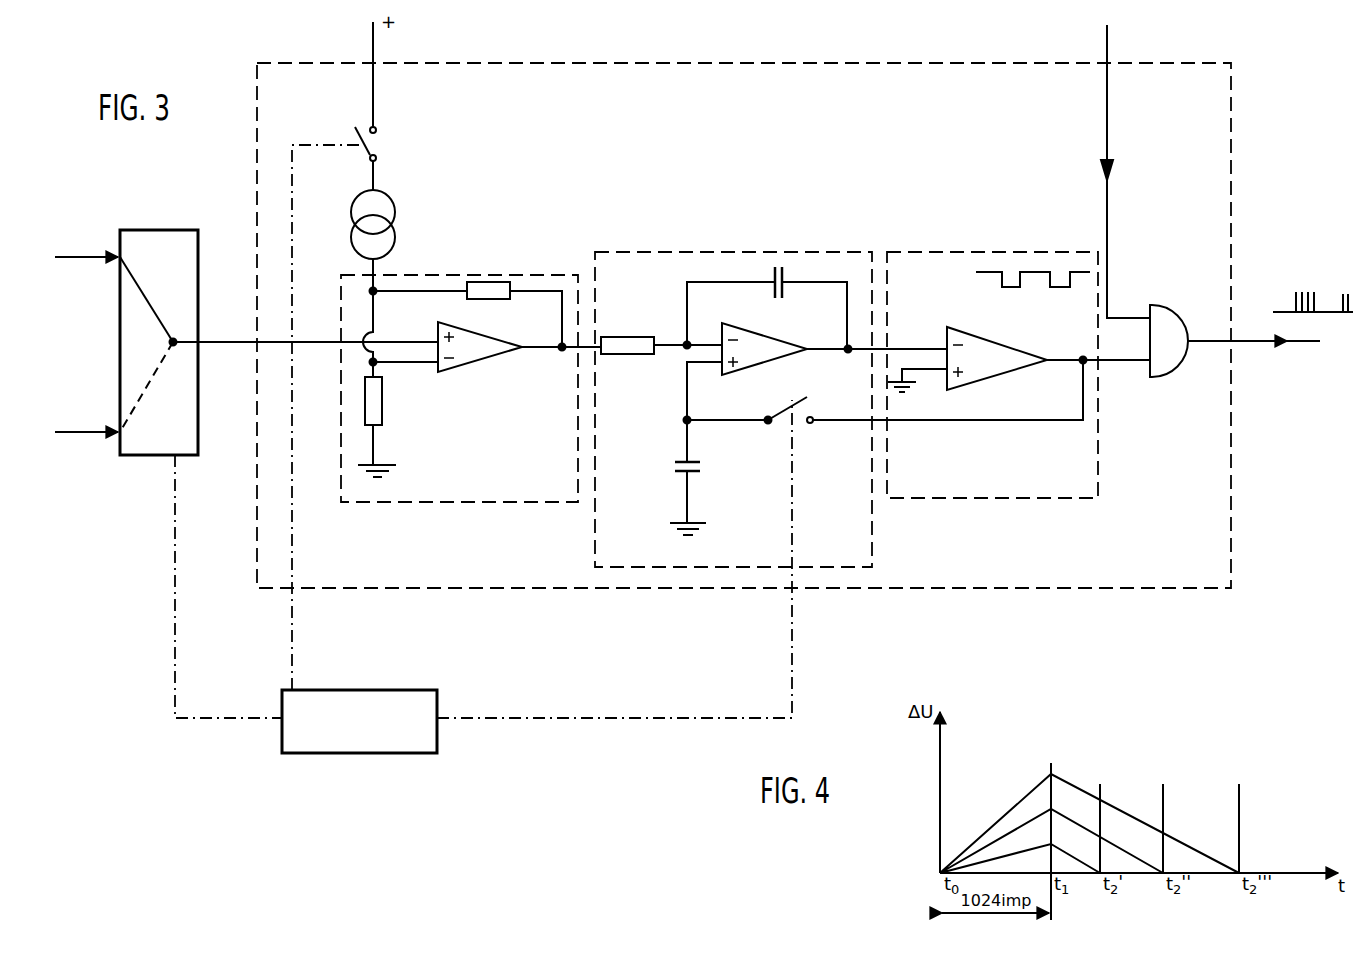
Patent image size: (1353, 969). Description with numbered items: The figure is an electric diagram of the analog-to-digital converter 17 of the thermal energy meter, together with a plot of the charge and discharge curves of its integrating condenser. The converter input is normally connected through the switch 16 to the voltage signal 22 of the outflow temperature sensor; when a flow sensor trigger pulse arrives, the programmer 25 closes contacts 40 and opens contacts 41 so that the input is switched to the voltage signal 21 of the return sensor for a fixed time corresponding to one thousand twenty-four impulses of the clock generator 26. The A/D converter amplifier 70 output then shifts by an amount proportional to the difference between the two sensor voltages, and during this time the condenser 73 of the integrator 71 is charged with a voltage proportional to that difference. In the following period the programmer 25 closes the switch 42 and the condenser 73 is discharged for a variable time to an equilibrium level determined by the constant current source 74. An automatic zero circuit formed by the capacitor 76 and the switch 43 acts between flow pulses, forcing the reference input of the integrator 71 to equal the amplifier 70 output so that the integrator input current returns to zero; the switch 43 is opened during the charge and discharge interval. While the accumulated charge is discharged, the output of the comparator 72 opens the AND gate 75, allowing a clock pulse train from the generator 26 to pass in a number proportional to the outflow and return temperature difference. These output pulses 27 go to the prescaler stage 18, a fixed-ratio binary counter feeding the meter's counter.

The switch 16 is at (159, 318).
The analog-to-digital converter 17 is at (245, 582).
The prescaler stage 18 is at (1313, 302).
The voltage signal of return sensor 21 is at (86, 419).
The voltage signal of outflow sensor 22 is at (86, 244).
The programmer 25 is at (358, 690).
The clock generator 26 is at (1112, 48).
The output signal θ 27 is at (1263, 357).
The contacts 40 is at (152, 377).
The contacts 41 is at (153, 305).
The switch 42 is at (375, 145).
The switch 43 is at (792, 404).
The A/D converter amplifier 70 is at (497, 505).
The integrator 71 is at (839, 395).
The comparator 72 is at (995, 500).
The condenser 73 is at (780, 262).
The constant current source 74 is at (351, 212).
The AND gate 75 is at (1182, 322).
The capacitor 76 is at (703, 465).